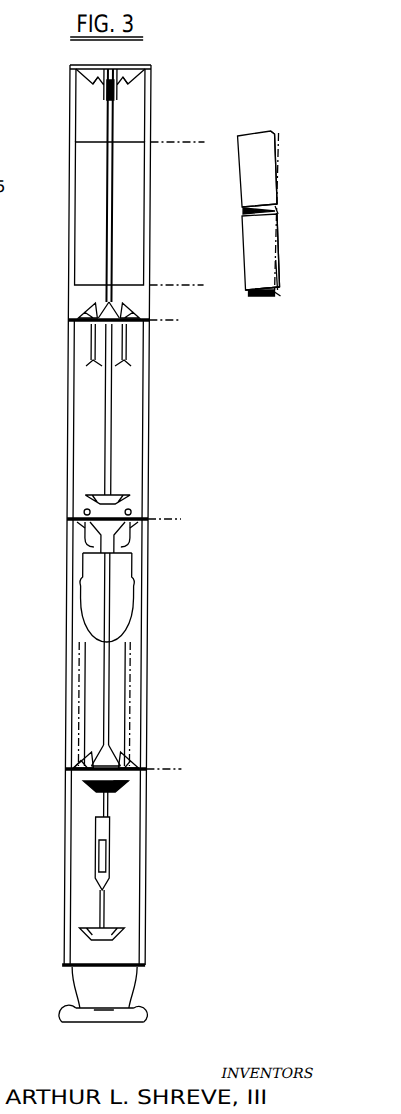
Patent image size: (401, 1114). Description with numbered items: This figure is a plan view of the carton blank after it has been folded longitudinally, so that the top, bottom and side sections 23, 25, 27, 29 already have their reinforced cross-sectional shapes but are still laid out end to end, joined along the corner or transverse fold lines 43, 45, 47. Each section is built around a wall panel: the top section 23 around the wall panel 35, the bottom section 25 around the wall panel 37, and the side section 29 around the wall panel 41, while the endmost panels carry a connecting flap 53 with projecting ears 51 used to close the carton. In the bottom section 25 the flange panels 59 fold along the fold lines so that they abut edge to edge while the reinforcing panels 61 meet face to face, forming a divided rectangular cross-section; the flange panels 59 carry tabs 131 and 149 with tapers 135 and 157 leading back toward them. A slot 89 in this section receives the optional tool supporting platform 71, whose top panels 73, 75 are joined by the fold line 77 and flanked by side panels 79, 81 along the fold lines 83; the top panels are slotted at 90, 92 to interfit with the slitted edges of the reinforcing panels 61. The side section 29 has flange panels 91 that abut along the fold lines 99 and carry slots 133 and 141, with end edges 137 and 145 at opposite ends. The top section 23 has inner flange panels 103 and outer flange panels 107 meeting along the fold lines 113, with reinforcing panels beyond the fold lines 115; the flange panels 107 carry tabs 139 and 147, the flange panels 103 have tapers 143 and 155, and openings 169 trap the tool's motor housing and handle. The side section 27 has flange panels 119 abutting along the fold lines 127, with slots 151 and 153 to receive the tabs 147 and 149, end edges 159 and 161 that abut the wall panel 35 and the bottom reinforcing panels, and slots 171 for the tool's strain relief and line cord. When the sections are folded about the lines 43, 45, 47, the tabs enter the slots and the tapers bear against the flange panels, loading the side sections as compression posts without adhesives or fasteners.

The top section 23 is at (151, 679).
The bottom section 25 is at (71, 247).
The side section 27 is at (151, 886).
The side section 29 is at (151, 428).
The wall panel 35 is at (152, 771).
The wall panel 37 is at (131, 251).
The wall panel 41 is at (124, 366).
The transverse fold line 43 is at (177, 321).
The transverse fold line 45 is at (136, 521).
The transverse fold line 47 is at (126, 784).
The projecting ears 51 is at (74, 1018).
The connecting flap 53 is at (109, 1020).
The flange panels 59 is at (80, 125).
The reinforcing panels 61 is at (107, 191).
The tool supporting platform 71 is at (273, 298).
The top panel 73 is at (280, 150).
The top panel 75 is at (281, 255).
The fold line 77 is at (283, 210).
The side panels 79 is at (262, 178).
The side panels 81 is at (249, 211).
The fold lines 83 is at (279, 270).
The slot 89 is at (142, 152).
The slot 90 is at (280, 136).
The flange panels 91 is at (77, 406).
The slot 92 is at (288, 294).
The longitudinal fold lines 99 is at (107, 426).
The flange panels 103 is at (128, 657).
The flange panels 107 is at (90, 660).
The longitudinal fold lines 113 is at (83, 690).
The longitudinal fold lines 115 is at (114, 669).
The flange panels 119 is at (100, 830).
The longitudinal fold lines 127 is at (105, 905).
The tabs 131 is at (90, 308).
The slots 133 is at (92, 364).
The tapers 135 is at (82, 320).
The end edges 137 is at (107, 342).
The tabs 139 is at (92, 532).
The slots 141 is at (103, 495).
The tapers 143 is at (77, 518).
The end edges 145 is at (91, 512).
The tabs 147 is at (131, 757).
The tabs 149 is at (97, 79).
The slots 151 is at (122, 788).
The slots 153 is at (120, 935).
The tapers 155 is at (95, 758).
The tapers 157 is at (78, 71).
The end edges 159 is at (81, 985).
The end edges 161 is at (88, 768).
The openings 169 is at (85, 612).
The slots 171 is at (101, 875).